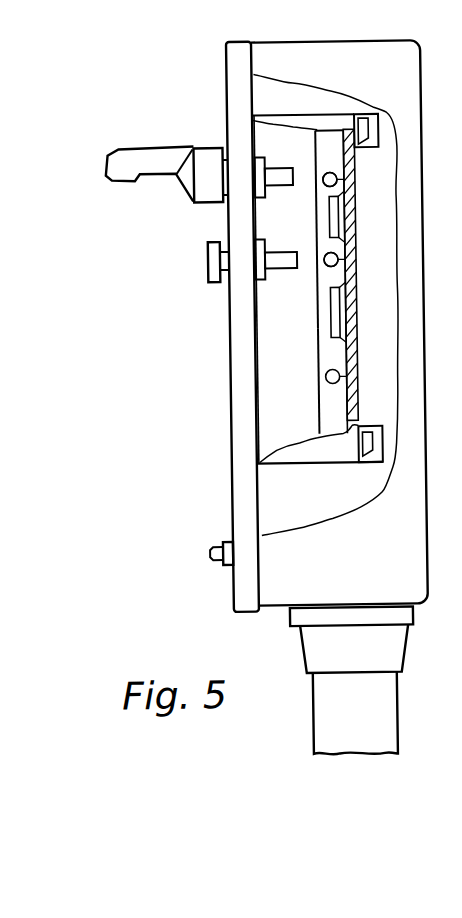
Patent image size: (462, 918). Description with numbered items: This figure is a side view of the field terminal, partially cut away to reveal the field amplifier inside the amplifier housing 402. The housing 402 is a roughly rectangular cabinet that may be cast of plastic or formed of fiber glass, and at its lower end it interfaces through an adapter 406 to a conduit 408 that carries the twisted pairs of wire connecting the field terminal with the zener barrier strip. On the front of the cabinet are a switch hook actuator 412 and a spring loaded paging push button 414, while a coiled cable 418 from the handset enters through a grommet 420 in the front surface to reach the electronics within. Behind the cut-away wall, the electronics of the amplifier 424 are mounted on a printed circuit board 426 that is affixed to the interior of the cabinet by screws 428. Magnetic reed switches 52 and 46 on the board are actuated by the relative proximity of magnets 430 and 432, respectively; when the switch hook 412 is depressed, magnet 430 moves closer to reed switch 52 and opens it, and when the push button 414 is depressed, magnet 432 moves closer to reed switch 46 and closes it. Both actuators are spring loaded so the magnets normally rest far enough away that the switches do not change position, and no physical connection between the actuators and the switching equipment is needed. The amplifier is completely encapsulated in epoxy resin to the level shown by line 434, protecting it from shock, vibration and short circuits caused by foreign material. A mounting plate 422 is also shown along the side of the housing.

The amplifier housing 402 is at (363, 557).
The adapter 406 is at (292, 641).
The conduit 408 is at (308, 736).
The switch hook actuator 412 is at (131, 147).
The spring loaded paging push button 414 is at (204, 254).
The coiled cable 418 is at (203, 552).
The grommet 420 is at (215, 542).
The mounting plate 422 is at (227, 400).
The amplifier 424 is at (326, 131).
The printed circuit board 426 is at (348, 157).
The screws 428 is at (361, 124).
The magnet 430 is at (282, 187).
The magnet 432 is at (282, 270).
The line 434 is at (314, 353).
The magnetic reed switch 46 is at (321, 260).
The magnetic reed switch 52 is at (321, 179).